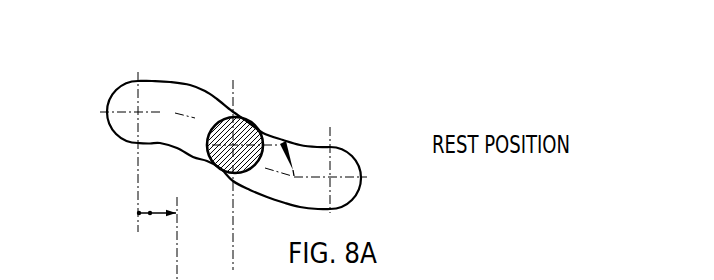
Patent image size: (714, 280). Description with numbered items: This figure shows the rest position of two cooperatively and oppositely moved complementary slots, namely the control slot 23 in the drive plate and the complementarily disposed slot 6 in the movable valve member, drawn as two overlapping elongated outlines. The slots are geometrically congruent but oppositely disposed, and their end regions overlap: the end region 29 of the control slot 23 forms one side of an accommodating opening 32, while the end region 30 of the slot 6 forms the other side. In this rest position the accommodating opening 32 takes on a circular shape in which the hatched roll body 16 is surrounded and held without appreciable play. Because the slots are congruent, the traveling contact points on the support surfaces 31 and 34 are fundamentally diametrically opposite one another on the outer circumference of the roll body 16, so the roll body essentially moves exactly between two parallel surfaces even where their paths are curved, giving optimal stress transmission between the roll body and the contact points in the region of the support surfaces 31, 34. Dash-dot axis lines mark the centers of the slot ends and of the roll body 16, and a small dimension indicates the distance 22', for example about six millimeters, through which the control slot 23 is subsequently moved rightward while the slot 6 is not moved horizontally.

The control slot 23 is at (152, 95).
The end region 30 is at (208, 138).
The roll body 16 is at (238, 128).
The end region 29 is at (263, 132).
The support surface 31 is at (294, 176).
The complementary slot 6 is at (318, 168).
The support surface 34 is at (387, 218).
The accommodating opening 32 is at (208, 158).
The distance 22' is at (109, 238).